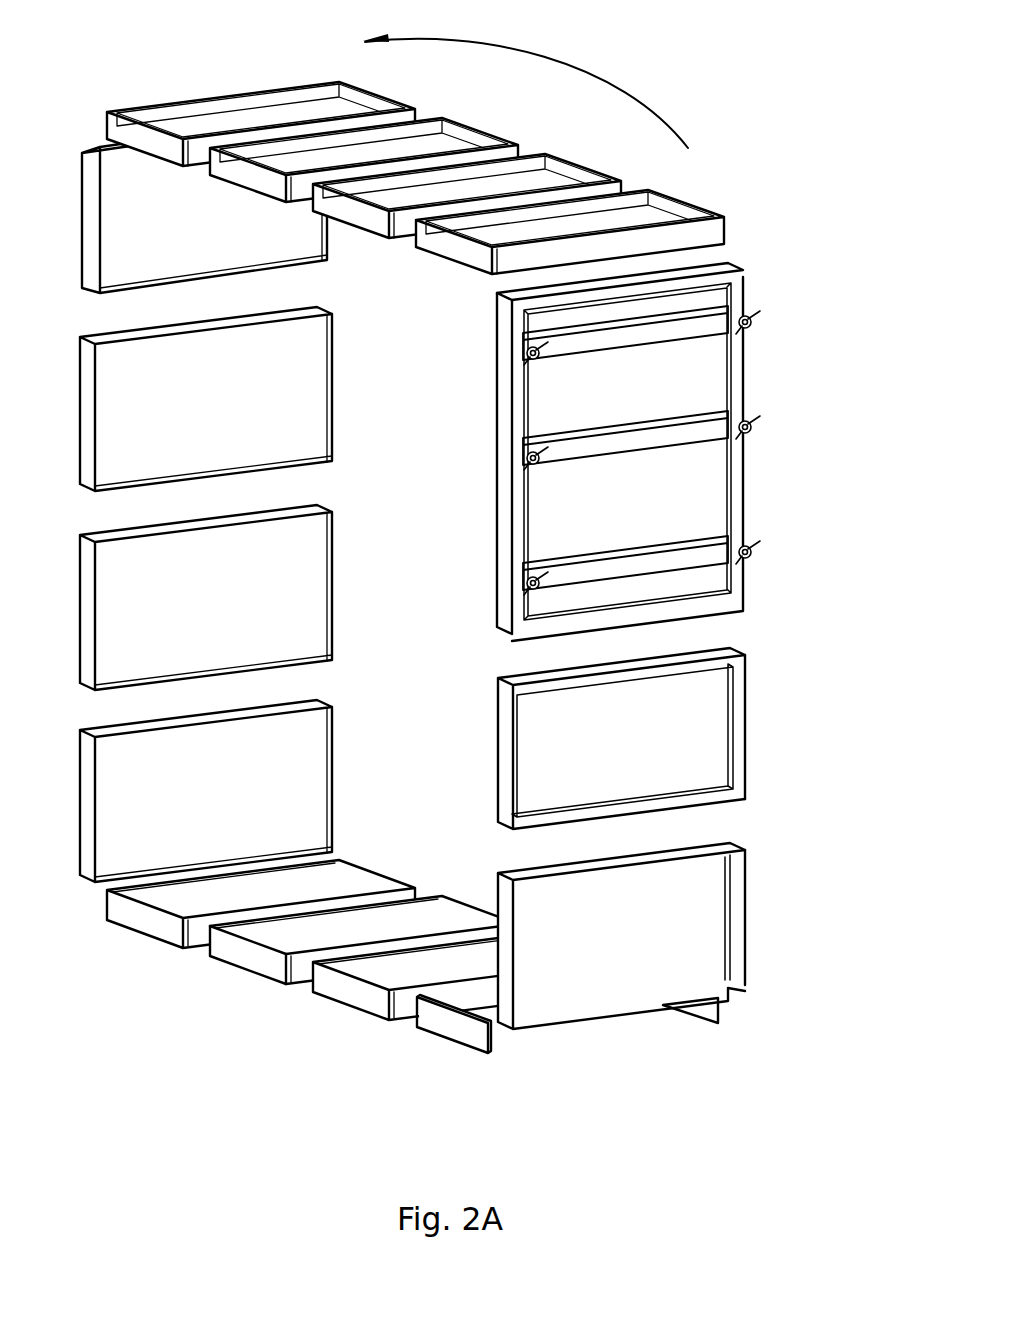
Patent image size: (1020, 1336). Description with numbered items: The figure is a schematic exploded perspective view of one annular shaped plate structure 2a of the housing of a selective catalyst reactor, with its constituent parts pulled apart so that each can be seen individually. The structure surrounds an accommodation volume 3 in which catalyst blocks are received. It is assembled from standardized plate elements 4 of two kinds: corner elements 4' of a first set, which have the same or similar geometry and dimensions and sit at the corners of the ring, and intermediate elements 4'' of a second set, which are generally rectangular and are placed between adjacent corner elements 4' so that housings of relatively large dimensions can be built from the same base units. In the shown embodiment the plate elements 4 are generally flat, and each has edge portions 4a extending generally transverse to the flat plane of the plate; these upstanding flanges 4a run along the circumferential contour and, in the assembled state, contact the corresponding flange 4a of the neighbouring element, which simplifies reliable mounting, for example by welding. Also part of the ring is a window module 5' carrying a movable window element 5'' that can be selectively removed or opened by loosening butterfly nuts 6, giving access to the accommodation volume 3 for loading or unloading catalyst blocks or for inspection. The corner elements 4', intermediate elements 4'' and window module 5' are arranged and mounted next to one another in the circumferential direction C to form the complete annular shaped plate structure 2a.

The annular shaped plate structure 2a is at (707, 179).
The circumferential direction C is at (525, 90).
The accommodation volume 3 is at (430, 553).
The plate element 4 is at (364, 918).
The corner element 4' is at (621, 958).
The intermediate element 4'' is at (657, 738).
The edge portion / upstanding flange 4a is at (497, 410).
The window module 5' is at (671, 447).
The movable window element 5'' is at (670, 448).
The butterfly nut 6 is at (755, 441).